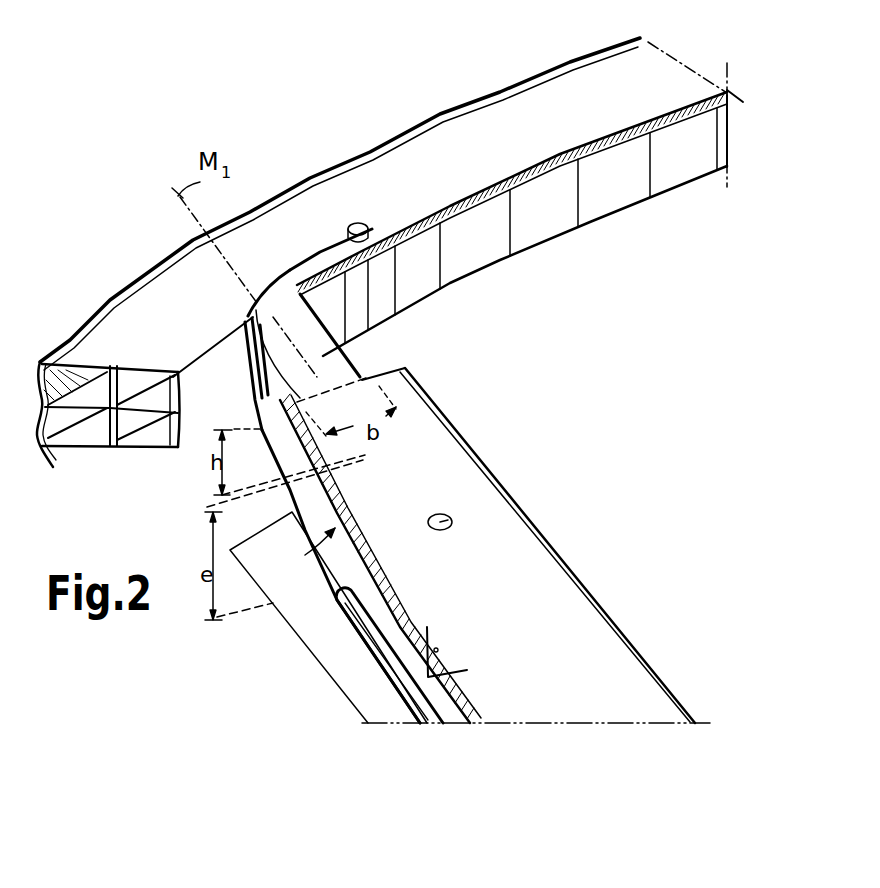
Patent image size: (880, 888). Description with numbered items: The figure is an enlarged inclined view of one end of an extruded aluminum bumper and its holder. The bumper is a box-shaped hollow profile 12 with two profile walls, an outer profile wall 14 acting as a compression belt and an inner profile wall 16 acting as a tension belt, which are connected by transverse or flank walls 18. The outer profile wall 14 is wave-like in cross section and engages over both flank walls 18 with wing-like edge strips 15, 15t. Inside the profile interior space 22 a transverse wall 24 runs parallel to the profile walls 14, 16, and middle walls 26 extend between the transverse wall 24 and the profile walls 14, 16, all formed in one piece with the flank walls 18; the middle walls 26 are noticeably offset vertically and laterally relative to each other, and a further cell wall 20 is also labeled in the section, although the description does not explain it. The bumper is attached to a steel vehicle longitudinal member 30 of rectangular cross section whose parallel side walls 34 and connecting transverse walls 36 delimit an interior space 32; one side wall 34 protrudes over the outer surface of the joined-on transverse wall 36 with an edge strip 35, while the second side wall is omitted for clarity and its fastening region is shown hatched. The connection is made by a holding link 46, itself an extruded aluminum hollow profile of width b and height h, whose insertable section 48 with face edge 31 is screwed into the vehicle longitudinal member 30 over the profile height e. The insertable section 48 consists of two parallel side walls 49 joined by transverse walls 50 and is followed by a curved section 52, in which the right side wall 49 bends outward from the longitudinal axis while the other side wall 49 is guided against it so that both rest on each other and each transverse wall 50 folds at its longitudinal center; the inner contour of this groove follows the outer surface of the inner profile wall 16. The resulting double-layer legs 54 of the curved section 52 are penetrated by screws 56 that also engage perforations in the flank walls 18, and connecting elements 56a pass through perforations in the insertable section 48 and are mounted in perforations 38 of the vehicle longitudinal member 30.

The hollow profile 12 is at (465, 149).
The outer profile wall 14 is at (72, 365).
The edge strip 15 is at (553, 63).
The edge strip 15t is at (50, 455).
The inner profile wall 16 is at (627, 198).
The transverse or flank wall 18 is at (617, 111).
The intermediate web 20 is at (138, 448).
The profile interior space 22 is at (158, 432).
The transverse wall 24 is at (110, 422).
The middle wall 26 is at (138, 376).
The vehicle longitudinal member 30 is at (628, 628).
The face edge 31 is at (305, 425).
The interior space 32 is at (467, 686).
The side wall 34 is at (510, 482).
The edge strip 35 is at (550, 540).
The transverse wall 36 is at (425, 440).
The perforation 38 is at (438, 514).
The holding link 46 is at (386, 360).
The insertable section 48 is at (407, 371).
The side wall 49 is at (382, 316).
The transverse wall 50 is at (331, 256).
The curved section 52 is at (257, 303).
The double-layer leg 54 is at (295, 268).
The screw 56 is at (372, 226).
The connecting element 56a is at (453, 531).